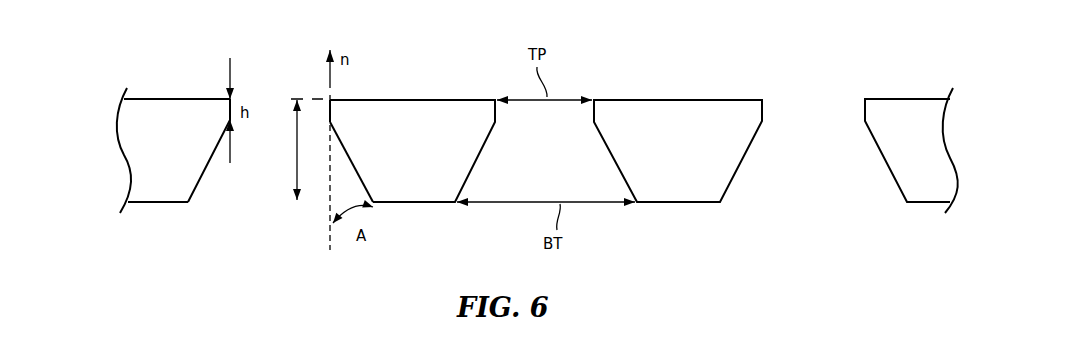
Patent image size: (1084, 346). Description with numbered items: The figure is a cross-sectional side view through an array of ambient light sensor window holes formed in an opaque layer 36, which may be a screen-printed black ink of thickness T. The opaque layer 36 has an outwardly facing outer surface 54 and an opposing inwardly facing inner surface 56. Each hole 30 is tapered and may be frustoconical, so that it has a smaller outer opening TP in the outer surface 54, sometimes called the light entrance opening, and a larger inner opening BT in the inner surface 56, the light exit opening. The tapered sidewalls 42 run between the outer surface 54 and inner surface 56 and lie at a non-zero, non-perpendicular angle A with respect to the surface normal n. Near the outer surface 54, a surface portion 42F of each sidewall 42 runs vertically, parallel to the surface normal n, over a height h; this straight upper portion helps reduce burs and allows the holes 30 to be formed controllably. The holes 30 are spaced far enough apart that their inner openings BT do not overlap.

The hole 30 is at (610, 121).
The opaque layer 36 is at (136, 150).
The sidewall 42 is at (357, 171).
The surface portion 42F is at (331, 108).
The outer surface 54 is at (174, 98).
The inner surface 56 is at (152, 207).